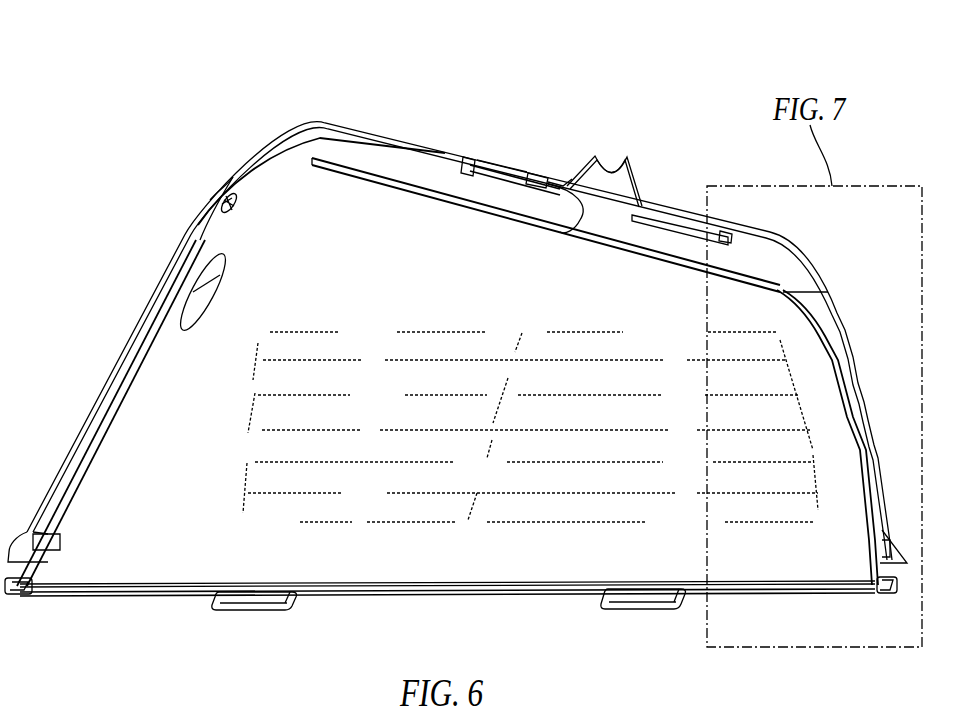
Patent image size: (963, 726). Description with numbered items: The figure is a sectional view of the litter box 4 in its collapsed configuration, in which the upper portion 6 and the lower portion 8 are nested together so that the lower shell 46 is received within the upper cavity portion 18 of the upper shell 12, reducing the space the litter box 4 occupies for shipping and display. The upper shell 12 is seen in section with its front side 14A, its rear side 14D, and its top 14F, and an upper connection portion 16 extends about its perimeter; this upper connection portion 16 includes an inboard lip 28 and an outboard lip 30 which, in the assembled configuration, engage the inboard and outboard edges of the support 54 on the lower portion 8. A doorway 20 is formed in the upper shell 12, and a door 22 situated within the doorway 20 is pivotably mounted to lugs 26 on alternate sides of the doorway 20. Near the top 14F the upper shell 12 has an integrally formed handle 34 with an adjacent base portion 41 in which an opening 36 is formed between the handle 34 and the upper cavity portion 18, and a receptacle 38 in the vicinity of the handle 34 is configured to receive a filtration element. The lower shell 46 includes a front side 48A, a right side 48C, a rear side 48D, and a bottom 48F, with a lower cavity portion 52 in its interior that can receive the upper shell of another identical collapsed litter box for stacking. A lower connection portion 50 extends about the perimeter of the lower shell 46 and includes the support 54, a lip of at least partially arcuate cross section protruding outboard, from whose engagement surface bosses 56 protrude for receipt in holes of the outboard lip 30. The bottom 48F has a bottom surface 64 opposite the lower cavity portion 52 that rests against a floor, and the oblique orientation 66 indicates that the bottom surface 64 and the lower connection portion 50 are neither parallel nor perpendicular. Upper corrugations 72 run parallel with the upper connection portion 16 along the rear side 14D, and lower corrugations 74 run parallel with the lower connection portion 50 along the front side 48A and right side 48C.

The litter box 4 is at (409, 85).
The upper portion 6 is at (455, 138).
The lower portion 8 is at (354, 149).
The upper shell 12 is at (241, 144).
The front side 14A is at (150, 297).
The rear side 14D is at (858, 378).
The top 14F is at (466, 162).
The upper connection portion 16 is at (20, 516).
The upper cavity portion 18 is at (772, 261).
The doorway 20 is at (307, 143).
The door 22 is at (274, 133).
The lugs 26 is at (243, 185).
The inboard lip 28 is at (880, 556).
The outboard lip 30 is at (900, 545).
The handle 34 is at (625, 159).
The opening 36 is at (563, 236).
The receptacle 38 is at (517, 174).
The base portion 41 is at (683, 210).
The lower shell 46 is at (89, 580).
The front side 48A is at (862, 453).
The right side 48C is at (315, 568).
The rear side 48D is at (107, 433).
The bottom 48F is at (453, 204).
The lower connection portion 50 is at (15, 607).
The lower cavity portion 52 is at (543, 560).
The support 54 is at (883, 597).
The bosses 56 is at (250, 612).
The bottom surface 64 is at (352, 167).
The oblique orientation 66 is at (693, 282).
The upper corrugations 72 is at (857, 352).
The lower corrugations 74 is at (835, 365).